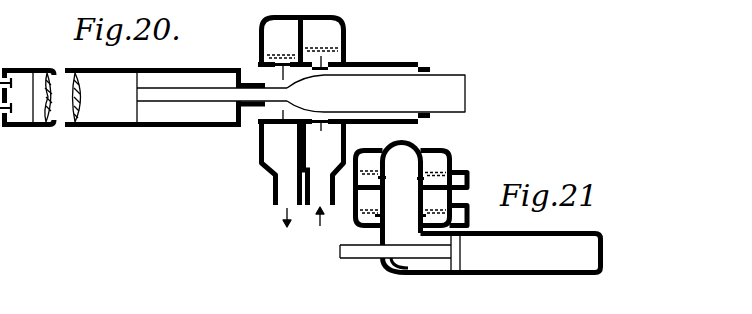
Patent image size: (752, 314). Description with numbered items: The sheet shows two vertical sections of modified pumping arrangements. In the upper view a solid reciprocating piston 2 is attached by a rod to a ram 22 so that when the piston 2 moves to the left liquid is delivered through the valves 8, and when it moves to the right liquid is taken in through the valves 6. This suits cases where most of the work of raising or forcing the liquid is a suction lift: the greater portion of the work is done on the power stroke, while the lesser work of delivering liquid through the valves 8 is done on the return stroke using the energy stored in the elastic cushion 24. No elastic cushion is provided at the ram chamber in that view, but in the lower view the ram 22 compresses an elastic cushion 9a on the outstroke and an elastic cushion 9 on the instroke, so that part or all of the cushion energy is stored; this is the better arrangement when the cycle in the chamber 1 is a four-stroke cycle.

In FIG. 20, the chamber 1 is at (23, 78).
In FIG. 20, the reciprocating piston 2 is at (108, 103).
In FIG. 20, the elastic cushion 24 is at (183, 84).
In FIG. 20, the valves 8 is at (280, 113).
In FIG. 20, the valves 6 is at (323, 120).
In FIG. 20, the ram 22 is at (452, 95).
In FIG. 21, the ram 22 is at (457, 250).
In FIG. 21, the elastic cushion 9 is at (402, 162).
In FIG. 21, the elastic cushion 9a is at (580, 252).